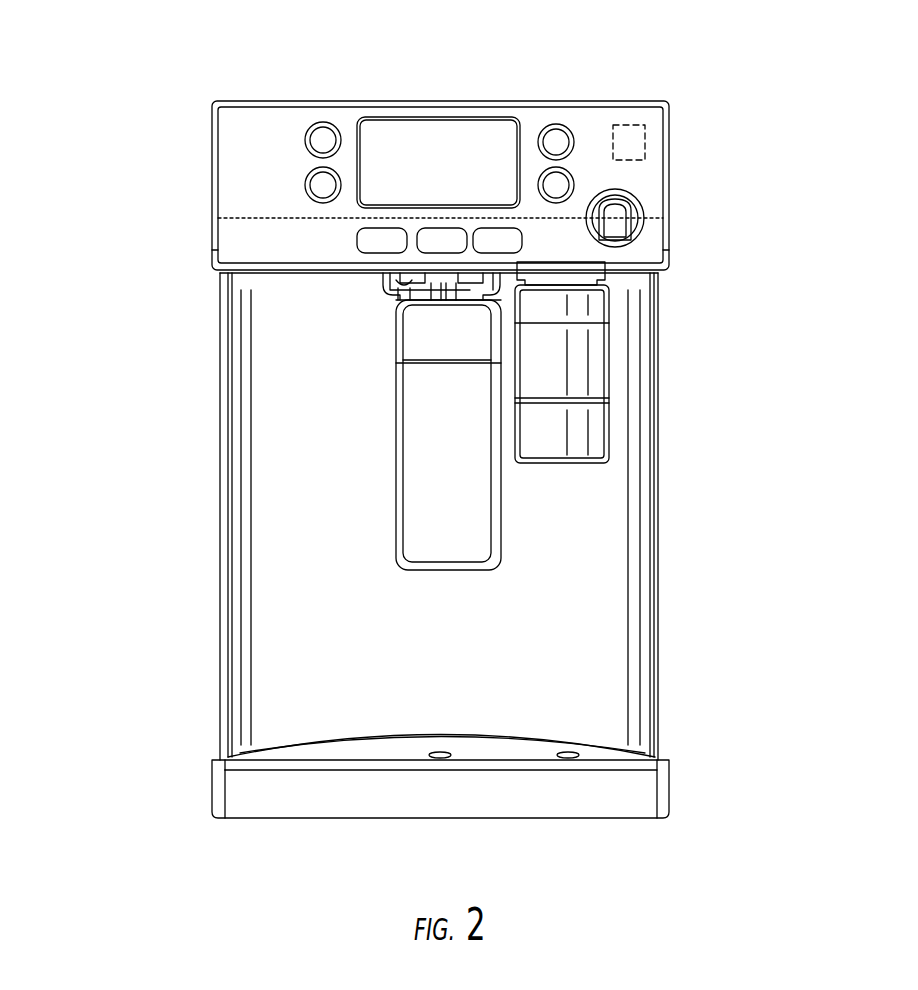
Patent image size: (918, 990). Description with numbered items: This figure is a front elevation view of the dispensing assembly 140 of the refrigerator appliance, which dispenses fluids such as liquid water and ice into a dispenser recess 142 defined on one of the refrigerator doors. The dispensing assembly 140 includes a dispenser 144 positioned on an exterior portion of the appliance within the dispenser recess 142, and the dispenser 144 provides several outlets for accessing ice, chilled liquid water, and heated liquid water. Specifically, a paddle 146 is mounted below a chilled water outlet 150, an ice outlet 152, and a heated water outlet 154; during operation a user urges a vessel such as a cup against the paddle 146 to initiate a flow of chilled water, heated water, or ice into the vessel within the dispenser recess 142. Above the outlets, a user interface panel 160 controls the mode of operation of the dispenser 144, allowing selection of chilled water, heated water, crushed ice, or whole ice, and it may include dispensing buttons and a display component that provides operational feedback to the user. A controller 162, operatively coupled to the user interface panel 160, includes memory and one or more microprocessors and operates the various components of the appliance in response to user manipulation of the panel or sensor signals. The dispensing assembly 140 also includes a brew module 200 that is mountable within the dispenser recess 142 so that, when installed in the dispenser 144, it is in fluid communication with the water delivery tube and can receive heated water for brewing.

The dispensing assembly 140 is at (103, 108).
The dispenser recess 142 is at (668, 634).
The dispenser 144 is at (662, 490).
The paddle 146 is at (425, 434).
The chilled water outlet 150 is at (435, 312).
The ice outlet 152 is at (402, 286).
The heated water outlet 154 is at (450, 312).
The user interface panel 160 is at (298, 142).
The controller 162 is at (648, 148).
The brew module 200 is at (612, 375).